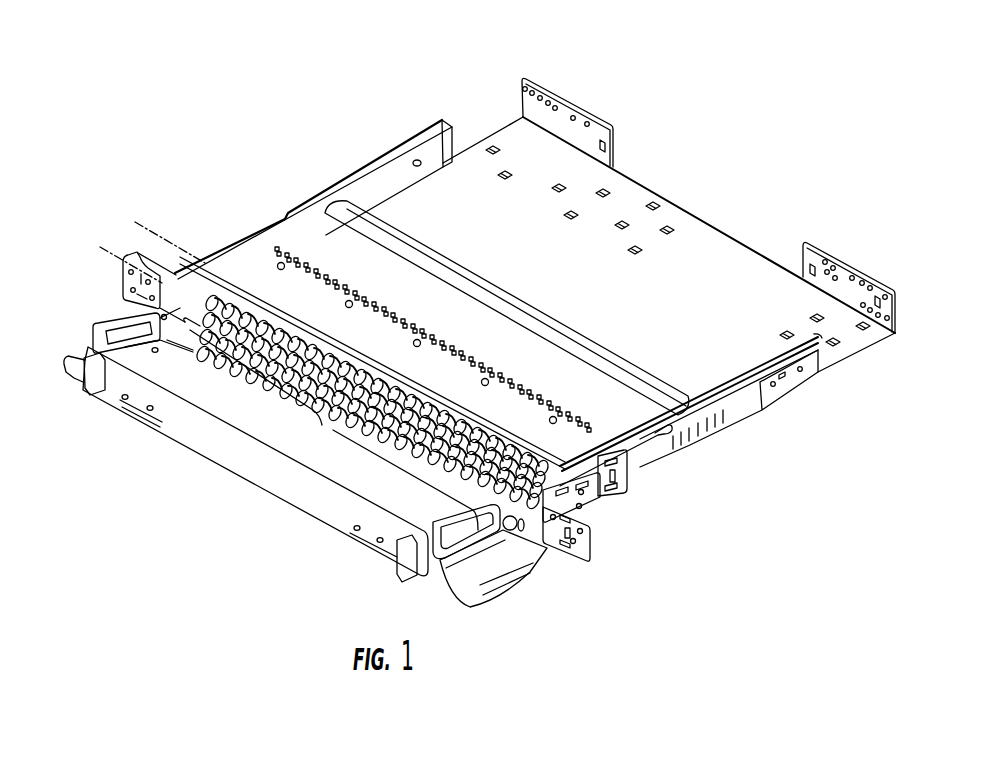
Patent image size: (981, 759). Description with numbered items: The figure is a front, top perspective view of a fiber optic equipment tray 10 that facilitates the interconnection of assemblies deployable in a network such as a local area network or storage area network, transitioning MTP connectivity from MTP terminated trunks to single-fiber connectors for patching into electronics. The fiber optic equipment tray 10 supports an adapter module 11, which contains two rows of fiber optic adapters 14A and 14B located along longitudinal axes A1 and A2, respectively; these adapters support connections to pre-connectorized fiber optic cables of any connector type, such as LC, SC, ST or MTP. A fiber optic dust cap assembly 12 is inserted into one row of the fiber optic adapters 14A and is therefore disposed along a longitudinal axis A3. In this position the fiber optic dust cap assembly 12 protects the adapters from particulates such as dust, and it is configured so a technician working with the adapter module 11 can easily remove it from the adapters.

The fiber optic equipment tray 10 is at (488, 132).
The adapter module 11 is at (325, 242).
The fiber optic dust cap assembly 12 is at (333, 430).
The fiber optic adapters 14A is at (268, 293).
The fiber optic adapters 14B is at (240, 293).
The longitudinal axis A1 is at (630, 480).
The longitudinal axis A2 is at (600, 495).
The longitudinal axis A3 is at (585, 540).